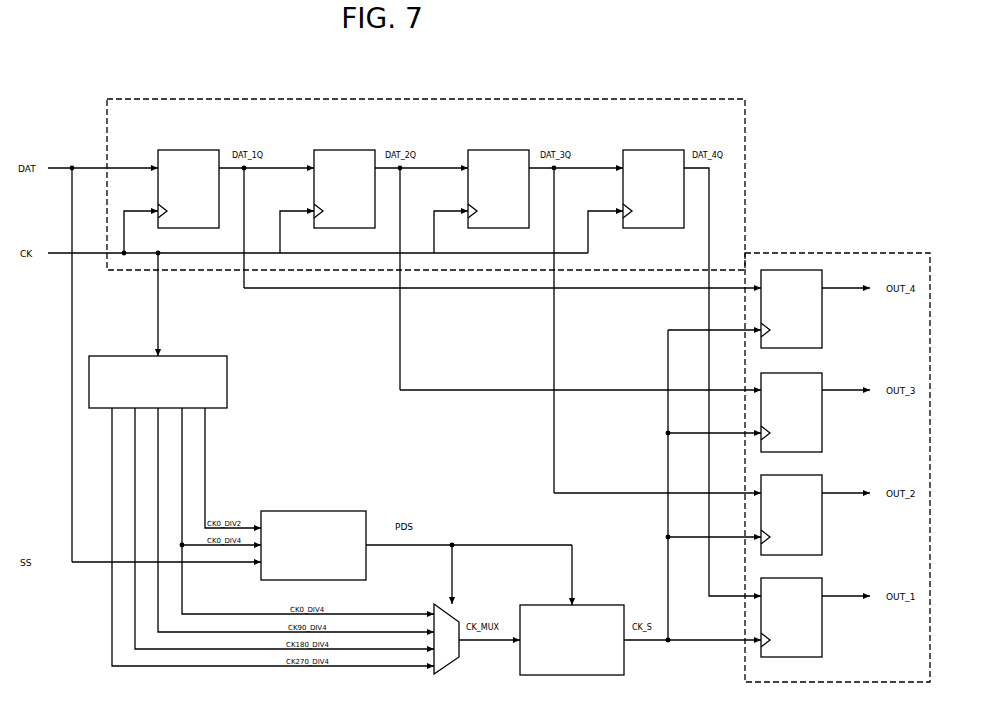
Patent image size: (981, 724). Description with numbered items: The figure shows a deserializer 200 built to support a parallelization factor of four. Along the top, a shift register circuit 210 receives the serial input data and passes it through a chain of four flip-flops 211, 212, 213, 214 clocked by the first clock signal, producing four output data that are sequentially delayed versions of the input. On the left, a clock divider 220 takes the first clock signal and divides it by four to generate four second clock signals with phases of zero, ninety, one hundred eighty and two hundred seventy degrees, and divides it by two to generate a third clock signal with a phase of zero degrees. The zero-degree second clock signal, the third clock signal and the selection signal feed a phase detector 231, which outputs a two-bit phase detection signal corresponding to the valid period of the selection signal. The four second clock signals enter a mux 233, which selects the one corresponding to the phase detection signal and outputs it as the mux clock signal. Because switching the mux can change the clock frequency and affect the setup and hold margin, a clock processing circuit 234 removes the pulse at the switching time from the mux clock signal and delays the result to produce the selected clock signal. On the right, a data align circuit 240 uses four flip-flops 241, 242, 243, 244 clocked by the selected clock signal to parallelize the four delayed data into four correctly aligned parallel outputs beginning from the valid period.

The deserializer 200 is at (778, 81).
The shift register circuit 210 is at (745, 184).
The flip-flop 211 is at (186, 150).
The flip-flop 212 is at (342, 150).
The flip-flop 213 is at (496, 150).
The flip-flop 214 is at (651, 150).
The clock divider 220 is at (158, 382).
The phase detector 231 is at (313, 545).
The mux 233 is at (452, 666).
The clock processing circuit 234 is at (572, 640).
The data align circuit 240 is at (851, 252).
The flip-flop 241 is at (822, 630).
The flip-flop 242 is at (822, 526).
The flip-flop 243 is at (822, 422).
The flip-flop 244 is at (822, 320).